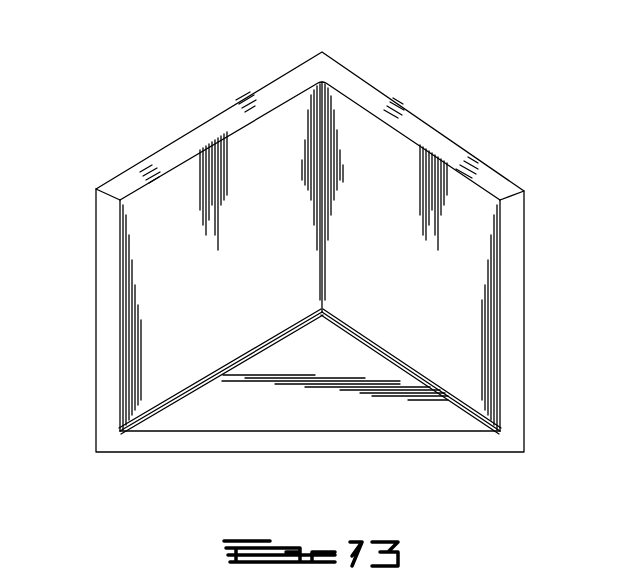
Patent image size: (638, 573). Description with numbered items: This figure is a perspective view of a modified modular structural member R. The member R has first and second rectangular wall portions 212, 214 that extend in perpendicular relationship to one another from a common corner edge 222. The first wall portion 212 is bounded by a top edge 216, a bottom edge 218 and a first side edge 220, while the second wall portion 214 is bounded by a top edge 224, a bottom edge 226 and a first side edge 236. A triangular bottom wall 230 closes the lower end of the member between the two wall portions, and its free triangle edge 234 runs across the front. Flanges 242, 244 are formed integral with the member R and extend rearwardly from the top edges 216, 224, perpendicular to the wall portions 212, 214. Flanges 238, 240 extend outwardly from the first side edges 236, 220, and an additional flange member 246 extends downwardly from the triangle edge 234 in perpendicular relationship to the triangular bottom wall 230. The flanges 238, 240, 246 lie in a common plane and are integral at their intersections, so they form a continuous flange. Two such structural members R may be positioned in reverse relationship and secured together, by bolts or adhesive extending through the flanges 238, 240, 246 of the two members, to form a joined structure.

The first rectangular wall portion 212 is at (168, 186).
The second rectangular wall portion 214 is at (372, 118).
The top edge 216 is at (273, 108).
The bottom edge 218 is at (252, 352).
The first side edge 220 is at (128, 260).
The common corner edge 222 is at (325, 92).
The top edge 224 is at (458, 174).
The bottom edge 226 is at (395, 355).
The triangular bottom wall 230 is at (268, 410).
The triangle edge 234 is at (287, 434).
The first side edge 236 is at (498, 250).
The flange 238 is at (518, 328).
The flange 240 is at (103, 330).
The flange 242 is at (208, 130).
The flange 244 is at (440, 142).
The additional flange member 246 is at (410, 442).
The modular structural member R is at (427, 112).